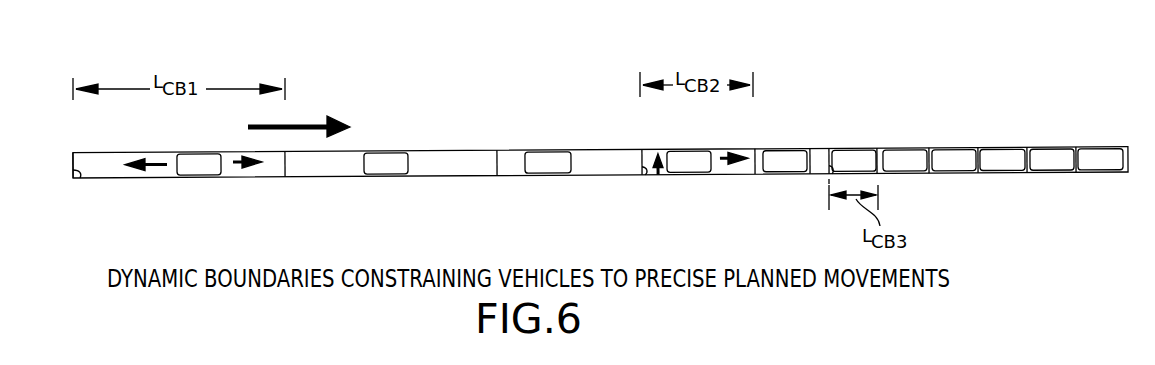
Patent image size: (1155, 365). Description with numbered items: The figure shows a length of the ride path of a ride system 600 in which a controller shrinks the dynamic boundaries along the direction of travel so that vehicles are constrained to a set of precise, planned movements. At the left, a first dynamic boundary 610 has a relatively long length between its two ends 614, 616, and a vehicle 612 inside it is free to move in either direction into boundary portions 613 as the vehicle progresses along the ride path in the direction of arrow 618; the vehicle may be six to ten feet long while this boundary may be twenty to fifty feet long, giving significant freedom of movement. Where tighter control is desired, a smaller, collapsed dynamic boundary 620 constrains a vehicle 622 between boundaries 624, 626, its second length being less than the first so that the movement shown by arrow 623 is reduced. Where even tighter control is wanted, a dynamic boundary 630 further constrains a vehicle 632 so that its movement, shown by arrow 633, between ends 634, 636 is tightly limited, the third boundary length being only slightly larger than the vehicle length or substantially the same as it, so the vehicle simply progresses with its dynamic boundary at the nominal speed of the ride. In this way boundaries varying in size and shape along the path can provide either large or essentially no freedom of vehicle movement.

The ride system 600 is at (922, 72).
The dynamic boundary 610 is at (167, 196).
The vehicle 612 is at (181, 152).
The boundary portions 613 is at (167, 166).
The end 614 is at (77, 179).
The end 616 is at (284, 179).
The arrow 618 is at (300, 122).
The collapsed dynamic boundary 620 is at (702, 201).
The vehicle 622 is at (681, 152).
The arrow 623 is at (722, 164).
The boundary 624 is at (645, 177).
The boundary 626 is at (751, 177).
The dynamic boundary 630 is at (857, 132).
The vehicle 632 is at (830, 178).
The arrow 633 is at (850, 212).
The end 634 is at (829, 150).
The end 636 is at (878, 150).